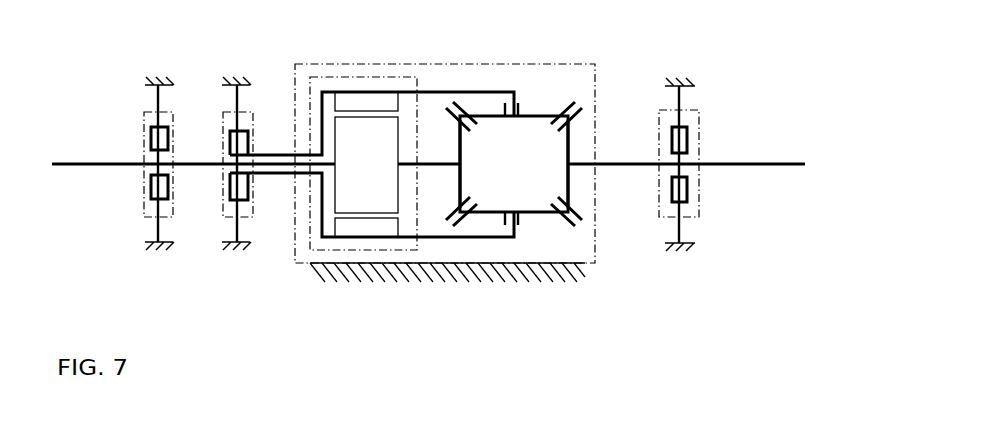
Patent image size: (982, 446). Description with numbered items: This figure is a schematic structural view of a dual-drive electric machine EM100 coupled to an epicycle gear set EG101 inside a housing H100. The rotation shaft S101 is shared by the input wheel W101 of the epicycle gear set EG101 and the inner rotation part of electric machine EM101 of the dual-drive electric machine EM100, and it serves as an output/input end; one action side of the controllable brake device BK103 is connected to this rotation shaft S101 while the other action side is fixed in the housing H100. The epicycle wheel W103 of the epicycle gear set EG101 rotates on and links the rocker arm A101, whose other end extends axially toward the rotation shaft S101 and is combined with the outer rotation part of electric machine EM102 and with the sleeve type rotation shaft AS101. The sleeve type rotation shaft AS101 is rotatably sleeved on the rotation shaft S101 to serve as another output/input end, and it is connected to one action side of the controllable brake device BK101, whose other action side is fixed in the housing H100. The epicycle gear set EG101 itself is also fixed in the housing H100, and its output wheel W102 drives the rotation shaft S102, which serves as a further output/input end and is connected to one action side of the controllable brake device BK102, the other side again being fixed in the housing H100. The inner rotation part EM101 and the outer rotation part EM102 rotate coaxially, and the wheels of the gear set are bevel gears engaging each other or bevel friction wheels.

The rotation shaft S101 is at (103, 162).
The rotation shaft S102 is at (767, 160).
The sleeve type rotation shaft AS101 is at (262, 175).
The controllable brake device BK101 is at (222, 125).
The controllable brake device BK102 is at (700, 140).
The controllable brake device BK103 is at (142, 125).
The housing H100 is at (163, 245).
The dual-drive electric machine EM100 is at (398, 66).
The inner rotation part of electric machine EM101 is at (370, 130).
The outer rotation part of electric machine EM102 is at (368, 227).
The epicycle gear set EG101 is at (549, 169).
The rocker arm A101 is at (493, 90).
The input wheel W101 is at (460, 145).
The output wheel W102 is at (567, 183).
The epicycle wheel W103 is at (458, 107).